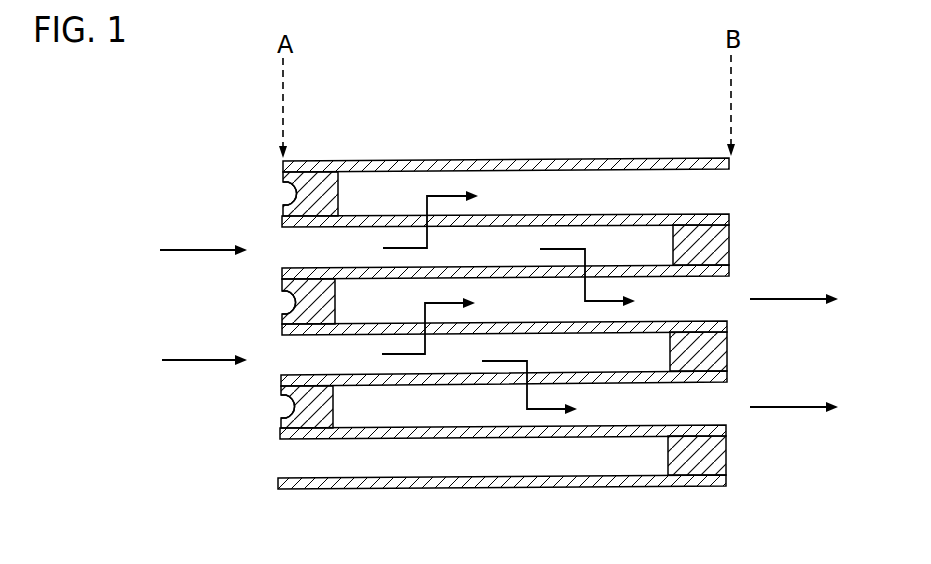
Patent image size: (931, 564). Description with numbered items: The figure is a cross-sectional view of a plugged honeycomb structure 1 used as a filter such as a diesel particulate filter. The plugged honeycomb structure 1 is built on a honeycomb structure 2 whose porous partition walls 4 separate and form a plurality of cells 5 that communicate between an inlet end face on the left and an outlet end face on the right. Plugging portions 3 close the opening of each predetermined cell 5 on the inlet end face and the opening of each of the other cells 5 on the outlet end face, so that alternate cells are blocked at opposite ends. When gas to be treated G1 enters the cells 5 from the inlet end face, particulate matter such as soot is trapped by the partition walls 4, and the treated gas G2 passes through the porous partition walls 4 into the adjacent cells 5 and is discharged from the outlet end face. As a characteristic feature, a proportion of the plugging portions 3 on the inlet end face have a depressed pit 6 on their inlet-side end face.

The plugged honeycomb structure 1 is at (593, 146).
The honeycomb structure 2 is at (603, 486).
The plugging portions 3 is at (322, 185).
The porous partition walls 4 is at (675, 214).
The cells 5 is at (434, 458).
The depressed pit 6 is at (283, 194).
The gas to be treated G1 is at (187, 305).
The treated gas G2 is at (814, 354).